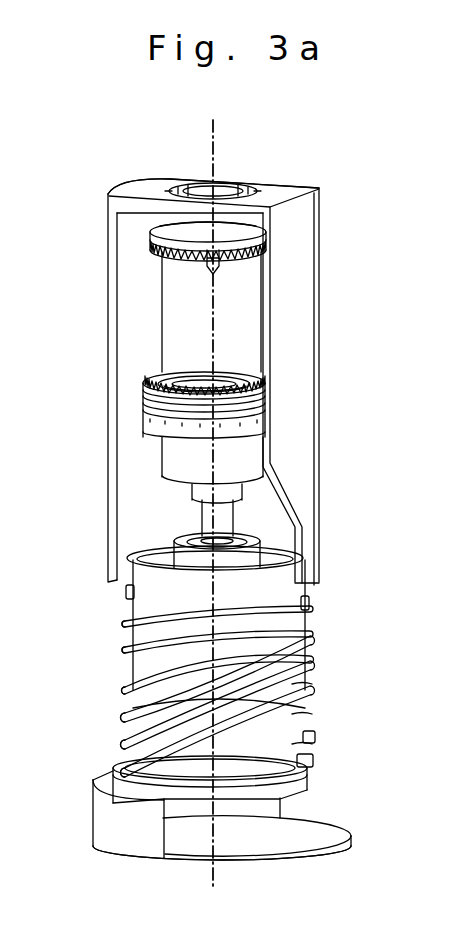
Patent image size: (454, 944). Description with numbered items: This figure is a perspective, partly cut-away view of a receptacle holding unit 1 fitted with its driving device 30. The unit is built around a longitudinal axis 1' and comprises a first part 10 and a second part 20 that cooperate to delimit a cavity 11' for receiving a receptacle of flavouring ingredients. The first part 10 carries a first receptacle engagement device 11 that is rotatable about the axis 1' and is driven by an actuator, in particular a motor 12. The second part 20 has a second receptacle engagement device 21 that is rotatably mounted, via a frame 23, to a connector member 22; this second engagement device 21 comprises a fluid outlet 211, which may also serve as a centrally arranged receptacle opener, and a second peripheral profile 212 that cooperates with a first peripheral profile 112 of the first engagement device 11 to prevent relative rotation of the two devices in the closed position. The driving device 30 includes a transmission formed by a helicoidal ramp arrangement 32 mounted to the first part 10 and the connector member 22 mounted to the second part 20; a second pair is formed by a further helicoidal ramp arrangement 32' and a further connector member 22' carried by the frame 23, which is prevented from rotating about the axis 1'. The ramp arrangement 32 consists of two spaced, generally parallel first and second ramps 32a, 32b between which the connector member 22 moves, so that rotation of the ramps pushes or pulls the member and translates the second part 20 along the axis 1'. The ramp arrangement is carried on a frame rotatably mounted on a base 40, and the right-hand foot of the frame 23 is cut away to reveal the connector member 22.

The receptacle holding unit 1 is at (186, 479).
The longitudinal axis 1' is at (243, 500).
The first part 10 is at (196, 346).
The first receptacle engagement device 11 is at (196, 447).
The cavity 11' is at (206, 354).
The first peripheral profile 112 is at (187, 378).
The motor 12 is at (242, 558).
The second part 20 is at (330, 173).
The second receptacle engagement device 21 is at (233, 228).
The fluid outlet 211 is at (217, 257).
The second peripheral profile 212 is at (197, 250).
The connector member 22 is at (250, 627).
The connector member 22' is at (95, 573).
The frame 23 is at (298, 408).
The driving device 30 is at (344, 805).
The helicoidal ramp arrangement 32 is at (263, 691).
The helicoidal ramp arrangement 32' is at (90, 699).
The first ramp 32a is at (313, 737).
The second ramp 32b is at (313, 758).
The base 40 is at (105, 806).